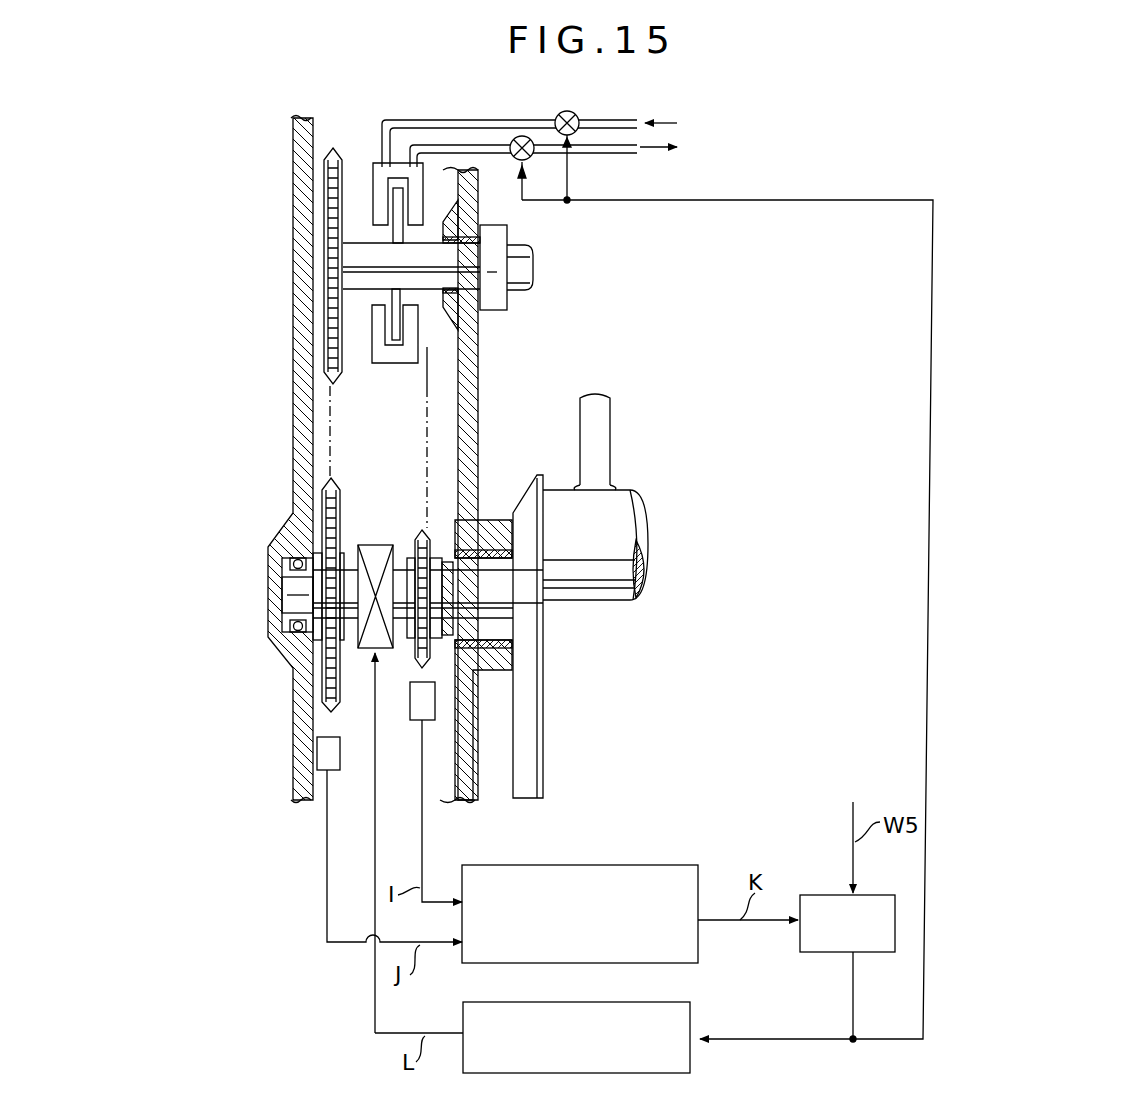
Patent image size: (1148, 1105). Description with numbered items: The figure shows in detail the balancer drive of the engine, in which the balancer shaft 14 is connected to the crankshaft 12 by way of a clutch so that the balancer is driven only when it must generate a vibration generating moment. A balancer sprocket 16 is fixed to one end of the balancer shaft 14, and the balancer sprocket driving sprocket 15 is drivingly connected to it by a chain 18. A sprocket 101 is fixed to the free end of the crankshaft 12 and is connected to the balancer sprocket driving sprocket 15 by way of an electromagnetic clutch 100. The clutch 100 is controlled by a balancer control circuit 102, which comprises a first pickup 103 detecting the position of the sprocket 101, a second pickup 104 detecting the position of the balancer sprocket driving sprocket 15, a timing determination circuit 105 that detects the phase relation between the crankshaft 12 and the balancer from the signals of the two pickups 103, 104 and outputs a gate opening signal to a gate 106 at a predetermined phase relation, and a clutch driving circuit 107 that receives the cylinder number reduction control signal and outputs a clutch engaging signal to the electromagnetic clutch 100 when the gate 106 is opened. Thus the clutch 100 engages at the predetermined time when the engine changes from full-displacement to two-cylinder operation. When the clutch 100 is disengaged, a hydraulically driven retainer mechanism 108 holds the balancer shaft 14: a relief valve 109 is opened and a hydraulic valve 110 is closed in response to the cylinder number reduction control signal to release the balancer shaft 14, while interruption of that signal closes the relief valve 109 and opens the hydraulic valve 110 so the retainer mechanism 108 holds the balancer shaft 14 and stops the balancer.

The crankshaft 12 is at (627, 530).
The balancer shaft 14 is at (520, 290).
The balancer sprocket driving sprocket 15 is at (322, 498).
The balancer sprocket 16 is at (323, 172).
The chain 18 is at (330, 433).
The electromagnetic clutch 100 is at (372, 545).
The sprocket 101 is at (415, 530).
The balancer control circuit 102 is at (358, 1044).
The first pickup 103 is at (410, 712).
The second pickup 104 is at (317, 755).
The timing determination circuit 105 is at (610, 865).
The gate 106 is at (820, 955).
The clutch driving circuit 107 is at (697, 1072).
The retainer mechanism 108 is at (373, 202).
The relief valve 109 is at (575, 114).
The hydraulic valve 110 is at (515, 160).